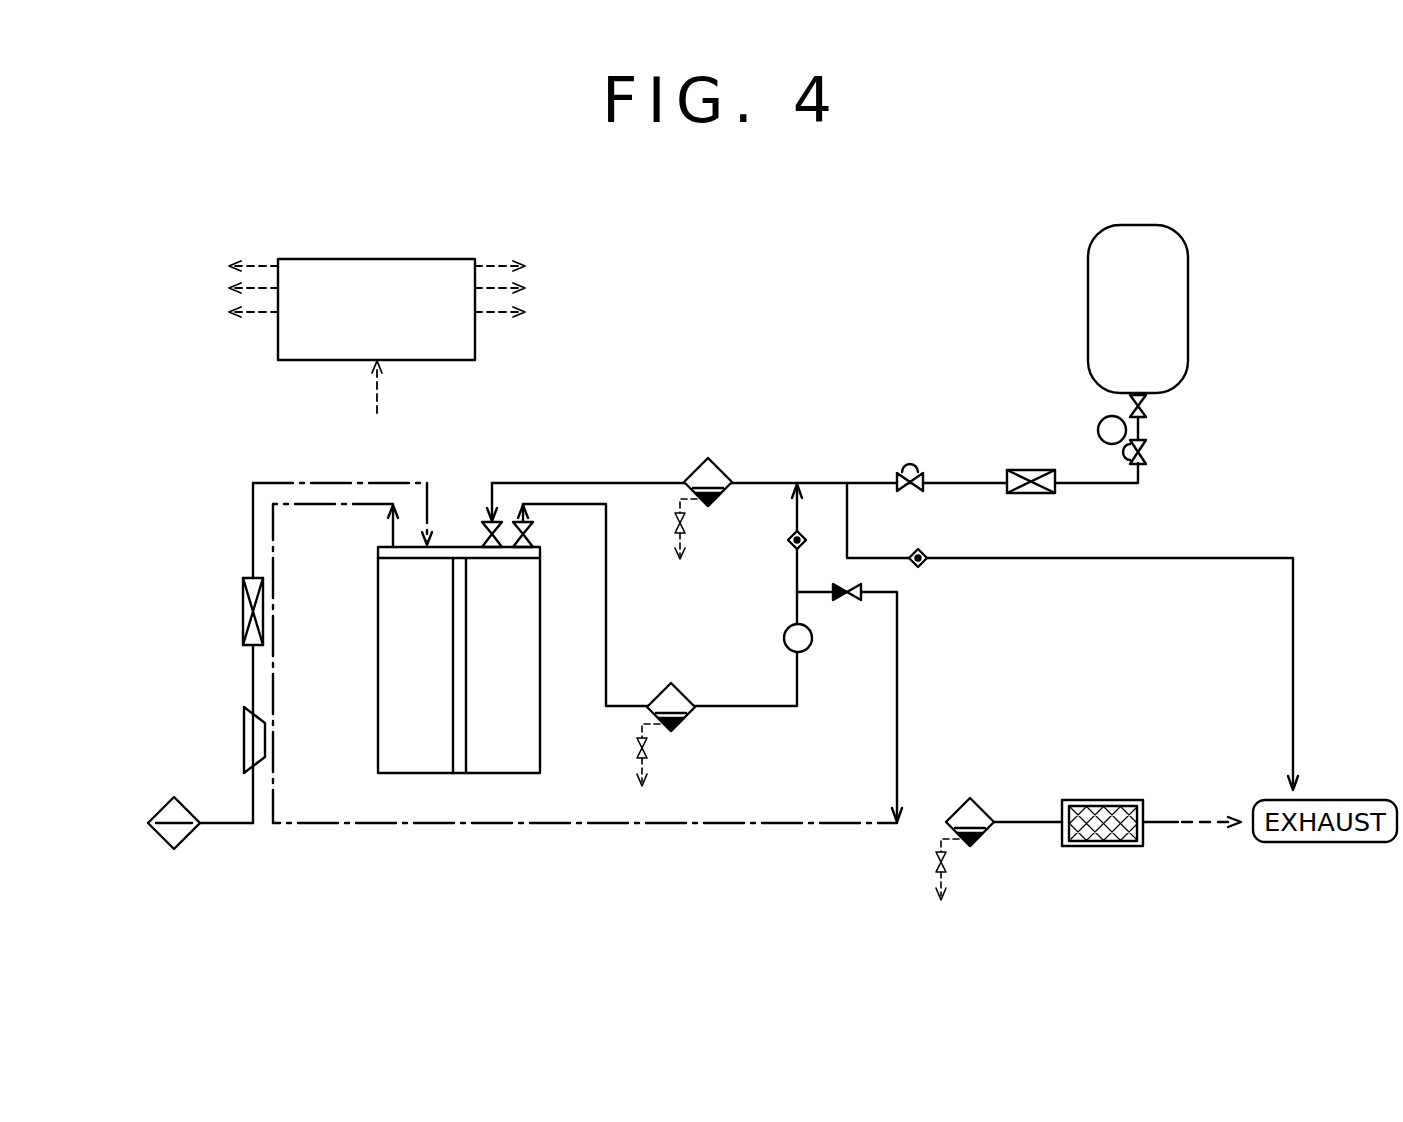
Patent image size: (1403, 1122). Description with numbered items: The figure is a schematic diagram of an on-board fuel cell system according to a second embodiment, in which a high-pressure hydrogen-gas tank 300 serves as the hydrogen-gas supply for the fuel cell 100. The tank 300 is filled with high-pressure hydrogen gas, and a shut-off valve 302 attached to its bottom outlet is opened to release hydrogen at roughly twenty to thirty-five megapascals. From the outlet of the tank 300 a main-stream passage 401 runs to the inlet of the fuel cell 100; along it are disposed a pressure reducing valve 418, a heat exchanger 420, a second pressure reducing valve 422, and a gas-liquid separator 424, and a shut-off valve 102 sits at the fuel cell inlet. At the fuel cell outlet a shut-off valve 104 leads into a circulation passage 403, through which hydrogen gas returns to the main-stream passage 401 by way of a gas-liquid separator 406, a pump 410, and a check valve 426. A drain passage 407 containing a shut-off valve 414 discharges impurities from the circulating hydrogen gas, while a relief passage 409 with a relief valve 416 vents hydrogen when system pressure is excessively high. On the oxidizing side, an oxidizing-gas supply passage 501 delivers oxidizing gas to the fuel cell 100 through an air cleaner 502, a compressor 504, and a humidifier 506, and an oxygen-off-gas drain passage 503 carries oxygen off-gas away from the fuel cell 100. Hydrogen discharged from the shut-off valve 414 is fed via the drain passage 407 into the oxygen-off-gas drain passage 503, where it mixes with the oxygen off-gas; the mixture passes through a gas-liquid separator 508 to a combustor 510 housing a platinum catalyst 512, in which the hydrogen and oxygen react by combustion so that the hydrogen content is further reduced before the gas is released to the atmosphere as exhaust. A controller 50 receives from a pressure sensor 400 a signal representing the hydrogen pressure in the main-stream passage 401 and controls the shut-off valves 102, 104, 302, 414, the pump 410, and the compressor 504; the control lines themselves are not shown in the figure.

The controller 50 is at (378, 203).
The fuel cell 100 is at (378, 740).
The shut-off valve 102 is at (489, 520).
The shut-off valve 104 is at (532, 528).
The high-pressure hydrogen-gas tank 300 is at (1188, 305).
The shut-off valve 302 is at (1146, 410).
The pressure sensor 400 is at (1098, 440).
The main-stream passage 401 is at (1110, 484).
The circulation passage 403 is at (800, 680).
The gas-liquid separator 406 is at (657, 687).
The drain passage 407 is at (898, 655).
The relief passage 409 is at (1108, 560).
The pump 410 is at (785, 641).
The shut-off valve 414 is at (852, 601).
The relief valve 416 is at (925, 565).
The pressure reducing valve 418 is at (1147, 456).
The heat exchanger 420 is at (1030, 470).
The pressure reducing valve 422 is at (910, 466).
The gas-liquid separator 424 is at (708, 457).
The check valve 426 is at (791, 546).
The oxidizing-gas supply passage 501 is at (253, 530).
The air cleaner 502 is at (160, 835).
The oxygen-off-gas drain passage 503 is at (325, 825).
The compressor 504 is at (244, 733).
The humidifier 506 is at (243, 607).
The gas-liquid separator 508 is at (970, 798).
The combustor 510 is at (1090, 800).
The platinum catalyst 512 is at (1095, 848).